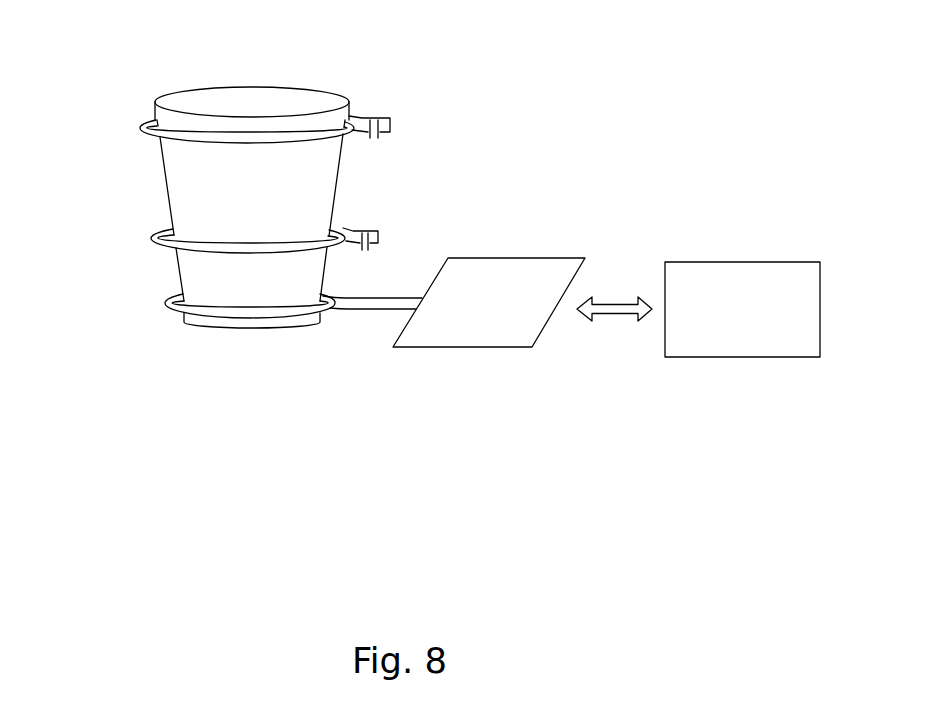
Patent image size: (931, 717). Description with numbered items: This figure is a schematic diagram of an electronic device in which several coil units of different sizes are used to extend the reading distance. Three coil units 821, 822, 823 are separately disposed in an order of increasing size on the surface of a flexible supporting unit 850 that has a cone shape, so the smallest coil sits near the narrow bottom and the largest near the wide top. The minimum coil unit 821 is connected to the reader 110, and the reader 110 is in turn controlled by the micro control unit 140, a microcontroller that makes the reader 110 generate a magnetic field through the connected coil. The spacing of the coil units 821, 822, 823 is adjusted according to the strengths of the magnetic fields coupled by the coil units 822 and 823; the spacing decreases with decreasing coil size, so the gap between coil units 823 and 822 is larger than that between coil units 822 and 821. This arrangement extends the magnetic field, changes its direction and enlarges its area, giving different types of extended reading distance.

The flexible supporting unit 850 is at (245, 330).
The coil unit 823 is at (147, 125).
The coil unit 822 is at (160, 233).
The coil unit 821 is at (167, 307).
The reader 110 is at (460, 348).
The micro control unit 140 is at (742, 357).